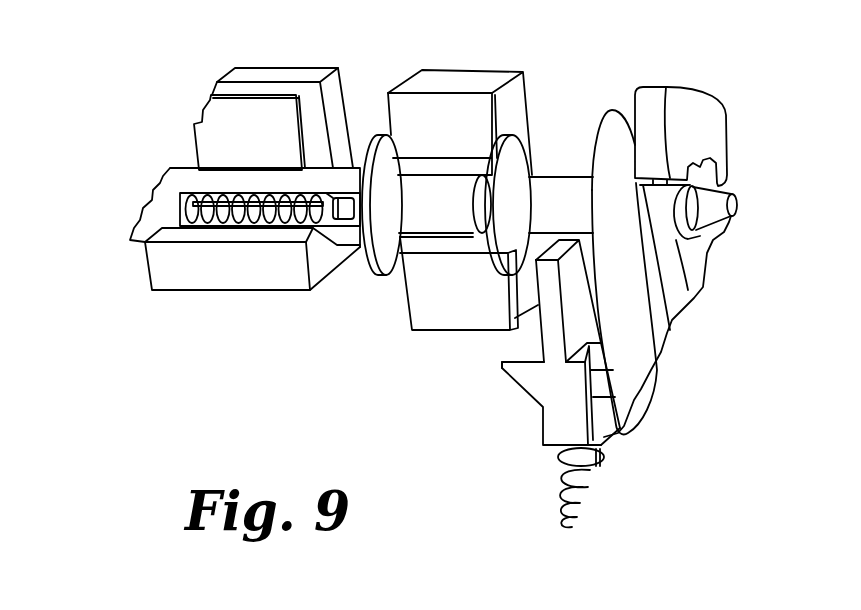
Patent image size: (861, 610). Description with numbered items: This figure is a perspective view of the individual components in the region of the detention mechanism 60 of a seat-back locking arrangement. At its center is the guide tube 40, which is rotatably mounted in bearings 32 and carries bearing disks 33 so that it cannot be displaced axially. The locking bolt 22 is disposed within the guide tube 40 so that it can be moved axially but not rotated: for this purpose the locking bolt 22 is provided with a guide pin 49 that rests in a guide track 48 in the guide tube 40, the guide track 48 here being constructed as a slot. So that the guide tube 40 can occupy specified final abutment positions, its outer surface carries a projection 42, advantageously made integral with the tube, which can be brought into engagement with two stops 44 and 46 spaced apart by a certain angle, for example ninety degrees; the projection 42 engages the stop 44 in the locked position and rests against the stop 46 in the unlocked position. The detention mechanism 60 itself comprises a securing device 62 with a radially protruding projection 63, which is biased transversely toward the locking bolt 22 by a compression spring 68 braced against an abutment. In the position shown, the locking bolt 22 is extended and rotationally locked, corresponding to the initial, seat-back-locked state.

The locking bolt 22 is at (560, 188).
The bearing 32 is at (480, 80).
The bearing disk 33 is at (513, 150).
The guide tube 40 is at (338, 177).
The projection 42 is at (242, 133).
The stop 44 is at (303, 72).
The stop 46 is at (187, 272).
The guide track 48 is at (205, 222).
The guide pin 49 is at (338, 212).
The detention mechanism 60 is at (493, 400).
The securing device 62 is at (552, 407).
The projection 63 is at (527, 333).
The compression spring 68 is at (562, 502).